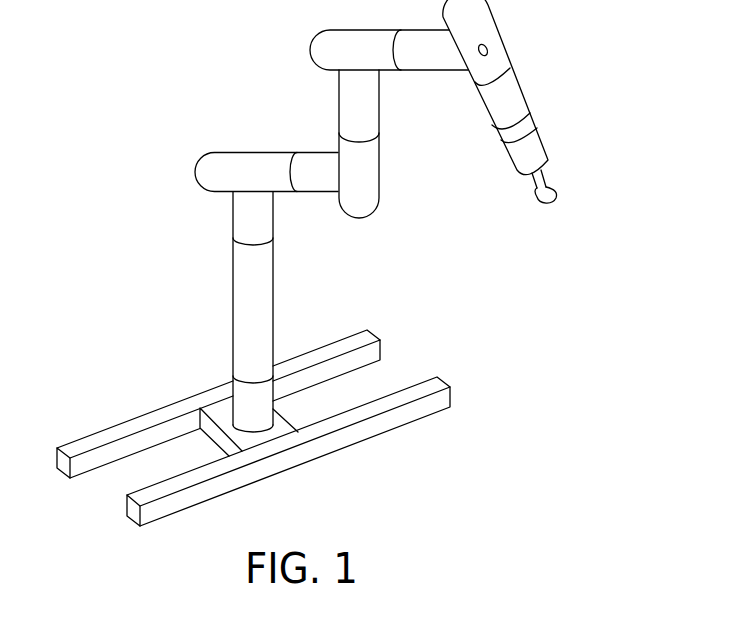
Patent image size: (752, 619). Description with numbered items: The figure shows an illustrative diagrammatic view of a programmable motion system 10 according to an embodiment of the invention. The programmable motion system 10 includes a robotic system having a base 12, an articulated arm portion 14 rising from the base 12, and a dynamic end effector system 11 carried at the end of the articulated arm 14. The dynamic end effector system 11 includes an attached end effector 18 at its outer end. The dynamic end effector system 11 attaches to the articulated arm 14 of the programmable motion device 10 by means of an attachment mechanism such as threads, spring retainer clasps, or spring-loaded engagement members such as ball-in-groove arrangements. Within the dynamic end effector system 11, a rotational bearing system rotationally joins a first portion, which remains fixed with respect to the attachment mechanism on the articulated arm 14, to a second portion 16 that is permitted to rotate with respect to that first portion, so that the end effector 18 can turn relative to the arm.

The programmable motion system 10 is at (100, 110).
The dynamic end effector system 11 is at (489, 158).
The base 12 is at (182, 404).
The articulated arm portion 14 is at (233, 157).
The second portion 16 is at (535, 120).
The end effector 18 is at (557, 195).